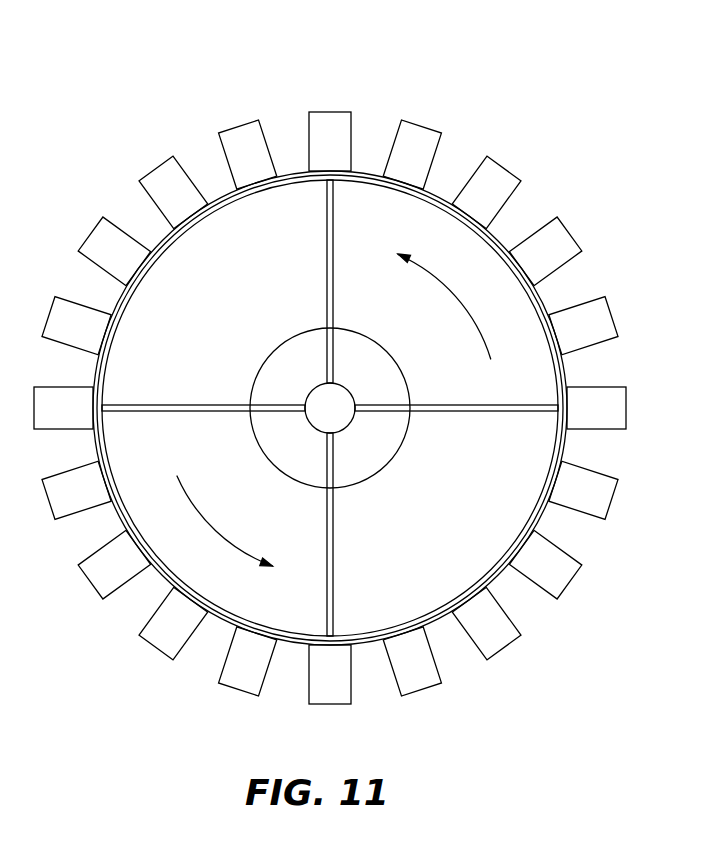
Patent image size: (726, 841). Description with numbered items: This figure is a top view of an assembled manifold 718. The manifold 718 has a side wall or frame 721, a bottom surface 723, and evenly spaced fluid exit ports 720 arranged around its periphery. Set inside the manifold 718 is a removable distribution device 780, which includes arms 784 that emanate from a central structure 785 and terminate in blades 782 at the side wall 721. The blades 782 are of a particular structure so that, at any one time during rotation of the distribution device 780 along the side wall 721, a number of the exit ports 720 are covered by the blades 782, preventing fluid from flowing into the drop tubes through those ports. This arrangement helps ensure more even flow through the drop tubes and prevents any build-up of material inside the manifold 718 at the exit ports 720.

The manifold 718 is at (75, 96).
The fluid exit ports 720 is at (421, 128).
The side wall 721 is at (567, 444).
The bottom surface 723 is at (240, 301).
The removable distribution device 780 is at (485, 490).
The blades 782 is at (288, 184).
The arms 784 is at (335, 231).
The central structure 785 is at (340, 401).